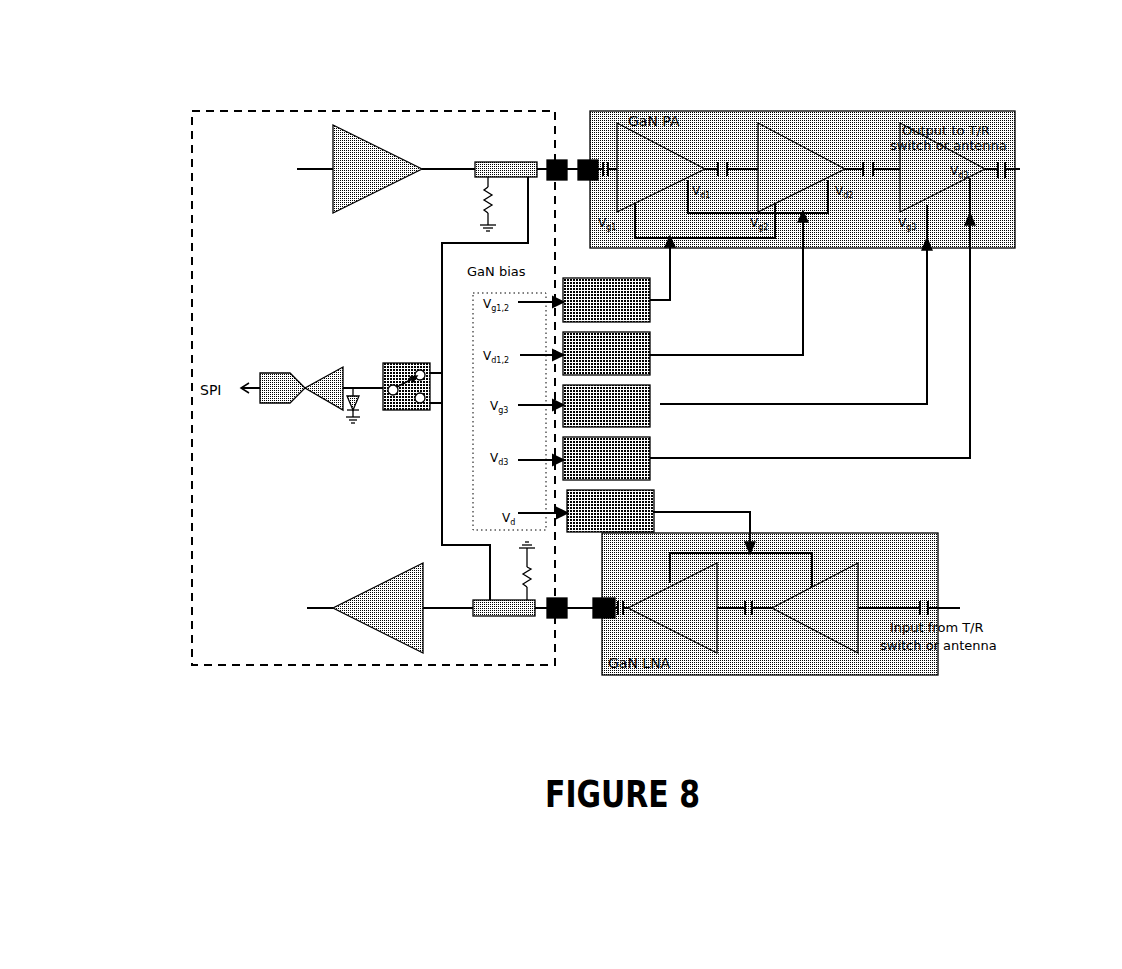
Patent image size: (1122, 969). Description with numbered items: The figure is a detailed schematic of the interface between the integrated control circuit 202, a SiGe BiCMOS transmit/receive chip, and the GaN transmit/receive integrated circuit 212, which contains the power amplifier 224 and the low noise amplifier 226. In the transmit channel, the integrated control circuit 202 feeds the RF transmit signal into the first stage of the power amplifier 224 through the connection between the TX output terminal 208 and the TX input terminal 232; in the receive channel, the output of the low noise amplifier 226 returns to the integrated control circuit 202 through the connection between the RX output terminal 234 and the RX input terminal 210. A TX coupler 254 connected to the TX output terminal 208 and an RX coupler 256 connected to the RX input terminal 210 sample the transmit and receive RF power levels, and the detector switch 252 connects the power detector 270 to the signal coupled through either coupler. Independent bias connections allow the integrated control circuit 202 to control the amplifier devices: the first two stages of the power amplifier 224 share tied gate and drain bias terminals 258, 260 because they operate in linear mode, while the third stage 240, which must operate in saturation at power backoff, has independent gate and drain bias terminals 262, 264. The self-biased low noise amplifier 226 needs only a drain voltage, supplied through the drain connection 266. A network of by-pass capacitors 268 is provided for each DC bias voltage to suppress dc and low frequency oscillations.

The integrated control circuit 202 is at (340, 557).
The TX output terminal 208 is at (550, 160).
The RX input terminal 210 is at (547, 617).
The transmit/receive integrated circuit 212 is at (878, 233).
The power amplifier 224 is at (943, 172).
The low noise amplifier 226 is at (813, 613).
The TX input terminal 232 is at (595, 160).
The RX output terminal 234 is at (603, 620).
The third stage of the power amplifier 240 is at (1013, 117).
The detector switch 252 is at (400, 412).
The TX coupler 254 is at (475, 177).
The RX coupler 256 is at (495, 613).
The gate bias terminal of first two power amplifier stages 258 is at (676, 250).
The drain bias terminal of first two power amplifier stages 260 is at (722, 352).
The gate bias terminal of third stage 262 is at (738, 403).
The drain bias terminal of third stage 264 is at (807, 457).
The drain connection 266 is at (750, 510).
The by-pass capacitors 268 is at (600, 508).
The power detector 270 is at (345, 405).